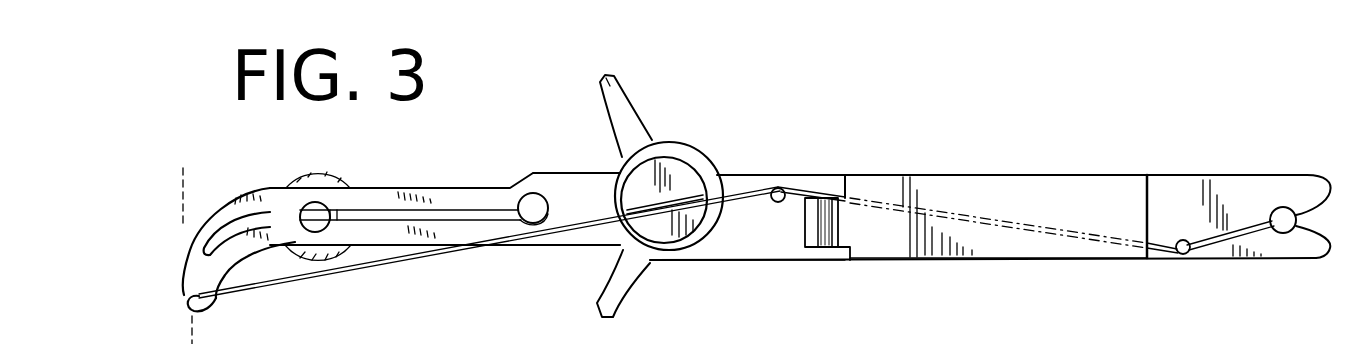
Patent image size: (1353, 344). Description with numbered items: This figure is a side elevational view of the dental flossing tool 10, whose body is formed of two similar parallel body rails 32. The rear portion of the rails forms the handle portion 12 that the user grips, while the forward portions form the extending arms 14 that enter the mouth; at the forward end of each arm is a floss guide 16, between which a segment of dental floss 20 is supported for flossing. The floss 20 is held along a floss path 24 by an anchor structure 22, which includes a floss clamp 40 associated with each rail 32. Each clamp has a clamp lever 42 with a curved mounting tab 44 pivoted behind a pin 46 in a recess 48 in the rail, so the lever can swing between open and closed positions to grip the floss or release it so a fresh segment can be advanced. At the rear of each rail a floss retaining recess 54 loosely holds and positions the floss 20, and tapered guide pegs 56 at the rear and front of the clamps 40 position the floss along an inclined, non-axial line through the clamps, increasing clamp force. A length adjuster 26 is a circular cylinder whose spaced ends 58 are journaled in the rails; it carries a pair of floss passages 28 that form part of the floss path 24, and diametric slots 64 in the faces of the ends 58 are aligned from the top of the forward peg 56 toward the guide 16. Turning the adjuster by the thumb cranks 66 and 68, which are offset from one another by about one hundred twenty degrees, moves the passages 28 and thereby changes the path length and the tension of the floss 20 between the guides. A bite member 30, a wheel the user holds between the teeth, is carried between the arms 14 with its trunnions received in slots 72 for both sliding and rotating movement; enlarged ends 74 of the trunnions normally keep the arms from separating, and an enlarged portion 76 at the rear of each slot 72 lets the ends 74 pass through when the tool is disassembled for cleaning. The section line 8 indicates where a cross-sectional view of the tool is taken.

The section line 8- 8 is at (158, 183).
The dental flossing tool 10 is at (525, 100).
The handle portion 12 is at (1183, 122).
The extending arms 14 is at (188, 248).
The floss guide 16 is at (186, 298).
The dental floss 20 is at (380, 262).
The anchor structure 22 is at (1027, 133).
The floss path 24 is at (557, 247).
The length adjuster 26 is at (658, 122).
The floss passages 28 is at (683, 173).
The bite member 30 is at (344, 175).
The body rails 32 is at (765, 242).
The floss clamp 40 is at (955, 173).
The clamp lever 42 is at (1102, 197).
The curved mounting tab 44 is at (805, 222).
The pin 46 is at (829, 218).
The recess 48 is at (834, 237).
The floss retaining recess 54 is at (1285, 205).
The guide pegs 56 is at (780, 187).
The ends 58 is at (657, 230).
The diametric slots 64 is at (695, 196).
The thumb crank 66 is at (613, 98).
The thumb crank 68 is at (607, 303).
The slots 72 is at (442, 215).
The enlarged ends 74 is at (313, 205).
The enlarged portion 76 is at (547, 198).